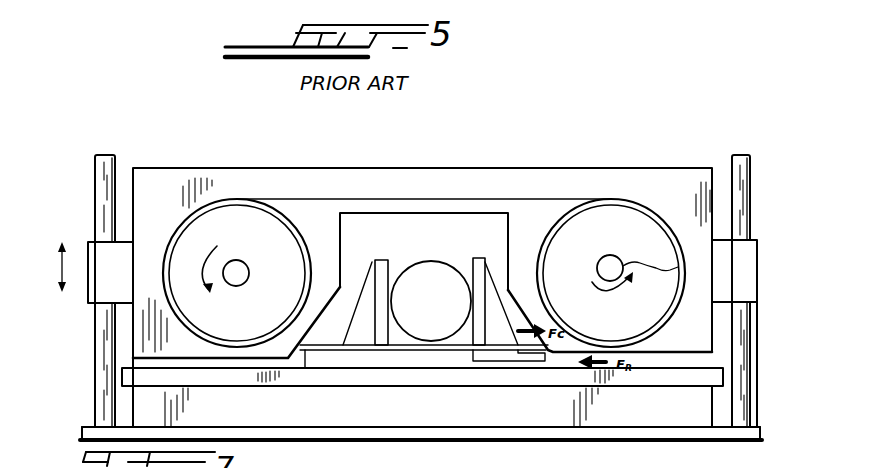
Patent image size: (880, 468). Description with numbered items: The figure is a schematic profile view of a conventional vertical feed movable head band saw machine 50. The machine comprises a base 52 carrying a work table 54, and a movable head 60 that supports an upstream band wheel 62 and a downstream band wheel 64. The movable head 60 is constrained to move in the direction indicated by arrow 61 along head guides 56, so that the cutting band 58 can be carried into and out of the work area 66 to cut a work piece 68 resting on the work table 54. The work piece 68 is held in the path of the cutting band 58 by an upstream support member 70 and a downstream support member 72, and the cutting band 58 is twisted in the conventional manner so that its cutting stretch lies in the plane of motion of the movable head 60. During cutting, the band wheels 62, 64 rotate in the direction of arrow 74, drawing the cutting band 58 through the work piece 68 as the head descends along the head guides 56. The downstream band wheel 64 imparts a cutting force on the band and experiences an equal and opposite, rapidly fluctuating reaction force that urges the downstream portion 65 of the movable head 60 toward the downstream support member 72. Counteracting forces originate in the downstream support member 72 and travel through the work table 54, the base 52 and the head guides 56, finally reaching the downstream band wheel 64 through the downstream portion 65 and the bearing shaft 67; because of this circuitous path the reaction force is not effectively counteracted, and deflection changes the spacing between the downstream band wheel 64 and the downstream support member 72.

The vertical feed movable head band saw machine 50 is at (634, 162).
The base 52 is at (705, 403).
The work table 54 is at (693, 378).
The head guides 56 is at (745, 346).
The cutting band 58 is at (332, 345).
The movable head 60 is at (310, 178).
The arrow 61 is at (47, 267).
The upstream band wheel 62 is at (233, 230).
The downstream band wheel 64 is at (640, 218).
The downstream portion 65 is at (695, 324).
The work area 66 is at (491, 226).
The bearing shaft 67 is at (612, 257).
The work piece 68 is at (431, 278).
The upstream support member 70 is at (386, 266).
The downstream support member 72 is at (478, 266).
The arrow 74 is at (406, 281).